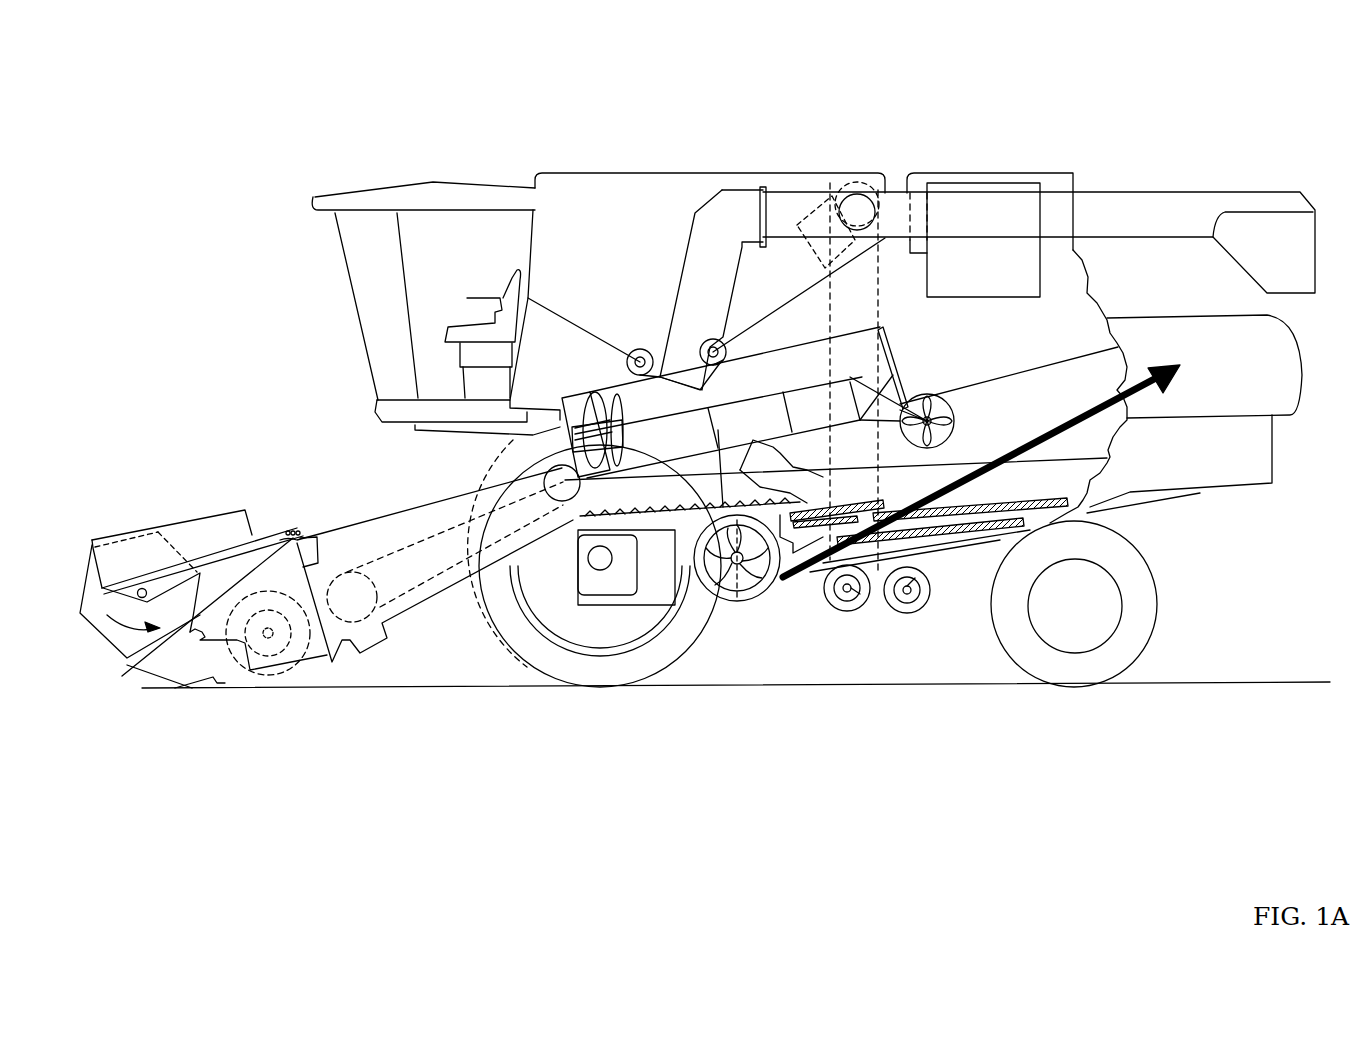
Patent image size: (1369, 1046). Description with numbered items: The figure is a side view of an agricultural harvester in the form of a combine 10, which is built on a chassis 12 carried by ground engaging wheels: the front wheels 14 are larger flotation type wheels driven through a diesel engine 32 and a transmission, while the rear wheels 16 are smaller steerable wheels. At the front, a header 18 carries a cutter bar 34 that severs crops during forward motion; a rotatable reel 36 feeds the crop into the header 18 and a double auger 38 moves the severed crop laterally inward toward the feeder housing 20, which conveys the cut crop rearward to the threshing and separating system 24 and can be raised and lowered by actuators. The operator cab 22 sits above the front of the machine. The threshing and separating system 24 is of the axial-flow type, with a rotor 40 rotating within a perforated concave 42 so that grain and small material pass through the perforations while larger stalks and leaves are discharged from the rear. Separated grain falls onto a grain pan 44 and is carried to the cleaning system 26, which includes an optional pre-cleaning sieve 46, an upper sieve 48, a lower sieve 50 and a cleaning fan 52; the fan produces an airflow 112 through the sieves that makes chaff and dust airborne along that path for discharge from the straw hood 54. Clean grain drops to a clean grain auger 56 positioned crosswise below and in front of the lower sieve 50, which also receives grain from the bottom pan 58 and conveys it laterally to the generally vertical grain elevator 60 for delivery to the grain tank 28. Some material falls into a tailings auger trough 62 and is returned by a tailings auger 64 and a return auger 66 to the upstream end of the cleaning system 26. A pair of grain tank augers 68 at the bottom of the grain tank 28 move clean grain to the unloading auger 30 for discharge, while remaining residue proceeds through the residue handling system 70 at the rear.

The combine 10 is at (412, 158).
The chassis 12 is at (1090, 512).
The front wheels 14 is at (502, 643).
The rear wheels 16 is at (1155, 622).
The header 18 is at (178, 513).
The feeder housing 20 is at (390, 517).
The operator cab 22 is at (345, 282).
The threshing and separating system 24 is at (500, 447).
The cleaning system 26 is at (800, 612).
The grain tank 28 is at (598, 182).
The unloading auger 30 is at (1168, 197).
The diesel engine 32 is at (975, 180).
The cutter bar 34 is at (190, 690).
The rotatable reel 36 is at (80, 580).
The double auger 38 is at (270, 660).
The rotor 40 is at (580, 395).
The perforated concave 42 is at (780, 375).
The grain pan 44 is at (570, 515).
The pre-cleaning sieve 46 is at (890, 503).
The upper sieve 48 is at (985, 498).
The lower sieve 50 is at (983, 535).
The cleaning fan 52 is at (745, 598).
The straw hood 54 is at (1283, 358).
The clean grain auger 56 is at (847, 611).
The bottom pan 58 is at (1007, 538).
The grain elevator 60 is at (880, 300).
The tailings auger trough 62 is at (985, 542).
The tailings auger 64 is at (907, 613).
The return auger 66 is at (805, 470).
The grain tank augers 68 is at (638, 348).
The residue handling system 70 is at (1240, 497).
The airflow 112 is at (981, 471).